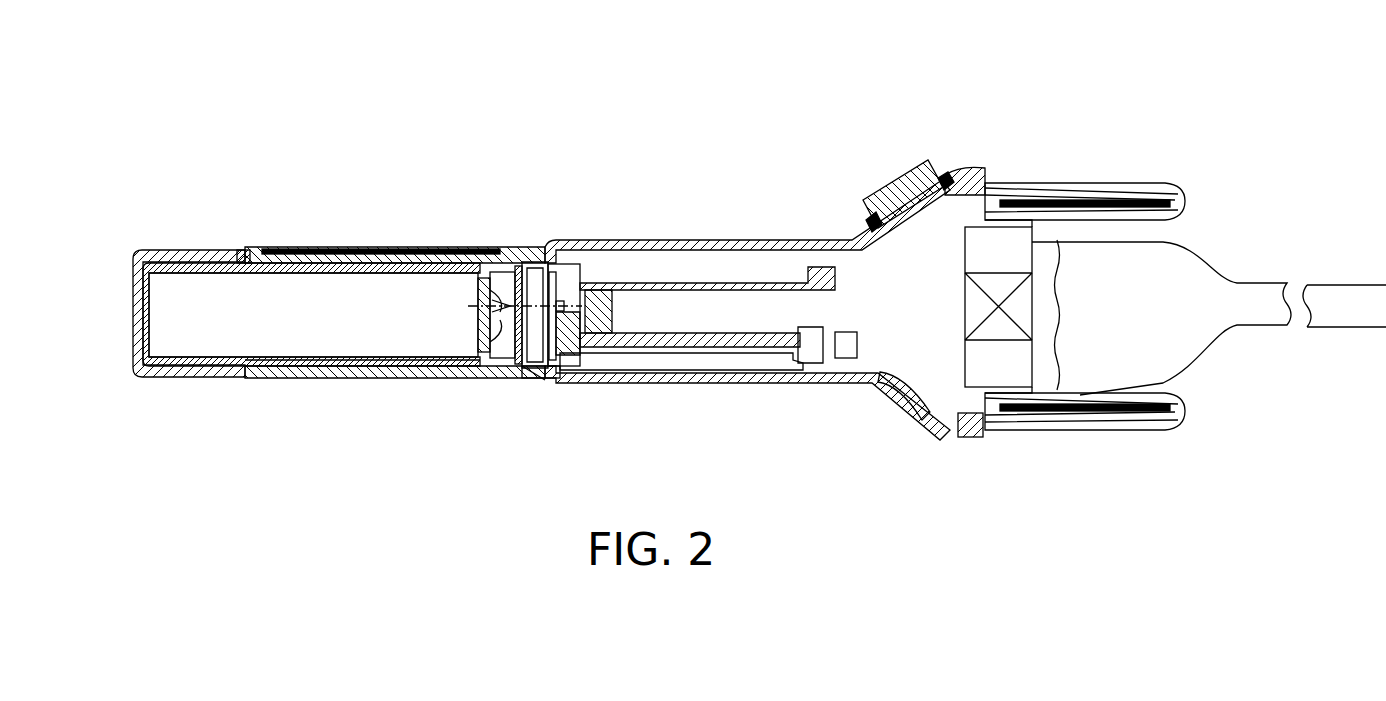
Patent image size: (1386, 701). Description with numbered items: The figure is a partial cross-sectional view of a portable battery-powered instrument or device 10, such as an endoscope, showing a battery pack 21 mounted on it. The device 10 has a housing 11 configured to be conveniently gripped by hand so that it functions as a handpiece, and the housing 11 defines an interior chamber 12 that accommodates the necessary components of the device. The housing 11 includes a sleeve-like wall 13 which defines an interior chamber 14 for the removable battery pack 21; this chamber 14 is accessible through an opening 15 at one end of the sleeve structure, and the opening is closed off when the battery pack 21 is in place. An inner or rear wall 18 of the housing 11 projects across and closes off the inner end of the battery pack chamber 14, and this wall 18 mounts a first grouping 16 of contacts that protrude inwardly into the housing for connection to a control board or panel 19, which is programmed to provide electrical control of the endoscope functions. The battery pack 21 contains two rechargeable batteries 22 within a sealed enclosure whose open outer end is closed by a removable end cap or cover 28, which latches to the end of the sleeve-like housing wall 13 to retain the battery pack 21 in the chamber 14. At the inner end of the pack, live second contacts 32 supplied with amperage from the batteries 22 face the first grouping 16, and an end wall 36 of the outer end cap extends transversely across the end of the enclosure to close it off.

The portable battery-powered instrument or device 10 is at (555, 85).
The housing 11 is at (852, 392).
The interior chamber 12 is at (706, 266).
The sleeve-like wall 13 is at (333, 379).
The interior chamber 14 is at (380, 361).
The opening 15 is at (237, 255).
The first grouping of contacts 16 is at (550, 278).
The inner or rear wall 18 is at (538, 370).
The control board or panel 19 is at (736, 356).
The battery pack 21 is at (292, 361).
The rechargeable batteries 22 is at (348, 325).
The removable end cap or cover 28 is at (133, 275).
The second contacts 32 is at (478, 304).
The end wall 36 is at (520, 300).